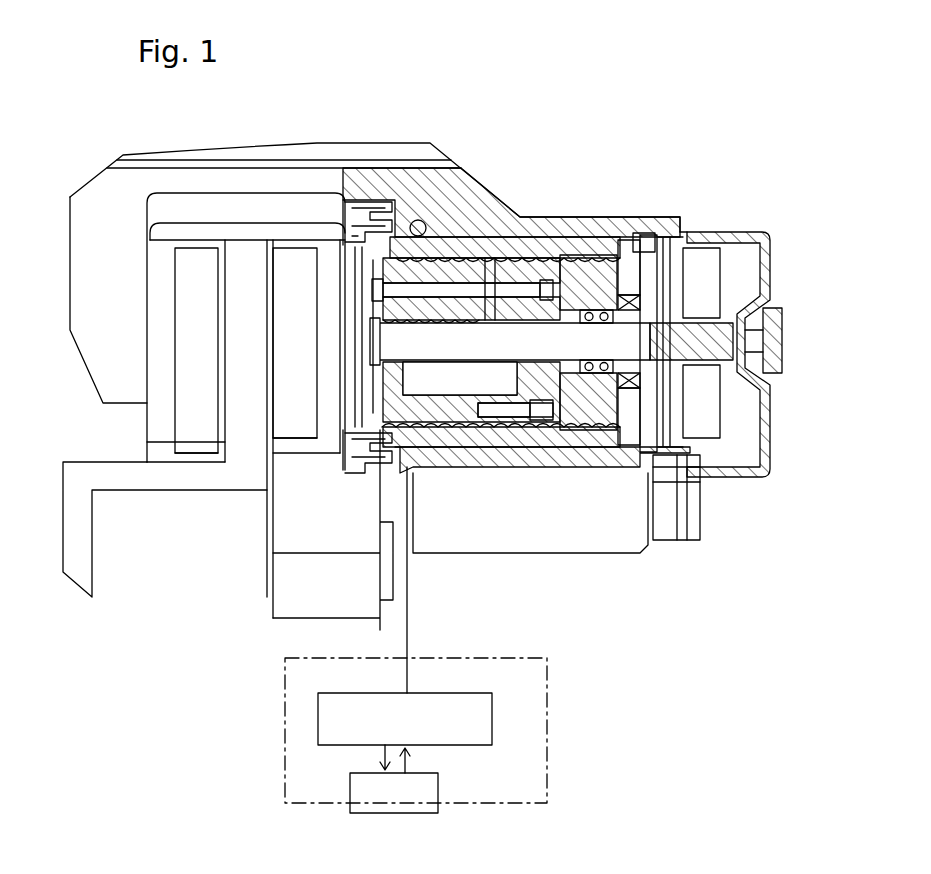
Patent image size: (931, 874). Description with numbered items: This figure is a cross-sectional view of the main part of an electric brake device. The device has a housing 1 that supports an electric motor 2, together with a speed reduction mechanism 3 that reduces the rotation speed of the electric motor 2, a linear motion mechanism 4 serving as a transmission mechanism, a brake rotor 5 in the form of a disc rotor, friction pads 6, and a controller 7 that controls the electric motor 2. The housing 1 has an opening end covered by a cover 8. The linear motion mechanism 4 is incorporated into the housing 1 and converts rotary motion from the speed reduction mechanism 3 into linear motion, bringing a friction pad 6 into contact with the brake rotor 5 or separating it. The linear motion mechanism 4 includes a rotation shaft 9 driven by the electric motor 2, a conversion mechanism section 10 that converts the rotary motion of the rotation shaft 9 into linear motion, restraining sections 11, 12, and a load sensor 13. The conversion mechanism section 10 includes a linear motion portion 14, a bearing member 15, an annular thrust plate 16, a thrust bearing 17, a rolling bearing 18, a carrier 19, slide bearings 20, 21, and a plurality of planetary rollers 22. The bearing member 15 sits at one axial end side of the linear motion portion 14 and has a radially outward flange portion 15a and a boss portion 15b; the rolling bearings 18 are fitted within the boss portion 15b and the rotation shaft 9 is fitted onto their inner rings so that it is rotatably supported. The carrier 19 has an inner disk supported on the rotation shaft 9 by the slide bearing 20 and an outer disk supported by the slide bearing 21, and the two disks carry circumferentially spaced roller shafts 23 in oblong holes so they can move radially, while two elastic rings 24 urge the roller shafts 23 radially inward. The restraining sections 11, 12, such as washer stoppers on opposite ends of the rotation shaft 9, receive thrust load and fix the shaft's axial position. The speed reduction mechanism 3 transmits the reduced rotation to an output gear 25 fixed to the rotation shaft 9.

The housing 1 is at (418, 178).
The electric motor 2 is at (523, 543).
The speed reduction mechanism 3 is at (710, 248).
The linear motion mechanism 4 is at (495, 220).
The brake rotor 5 is at (240, 458).
The friction pads 6 is at (195, 428).
The controller 7 is at (547, 682).
The cover 8 is at (764, 255).
The rotation shaft 9 is at (562, 285).
The conversion mechanism section 10 is at (513, 243).
The restraining section 11 is at (373, 300).
The restraining section 12 is at (730, 232).
The load sensor 13 is at (633, 233).
The linear motion portion 14 is at (468, 440).
The bearing member 15 is at (603, 375).
The flange portion 15a is at (610, 265).
The boss portion 15b is at (585, 290).
The annular thrust plate 16 is at (578, 270).
The thrust bearing 17 is at (583, 470).
The rolling bearing 18 is at (620, 460).
The carrier 19 is at (427, 410).
The slide bearing 20 is at (523, 447).
The slide bearing 21 is at (385, 200).
The planetary rollers 22 is at (473, 212).
The roller shafts 23 is at (425, 290).
The elastic rings 24 is at (345, 400).
The output gear 25 is at (707, 410).